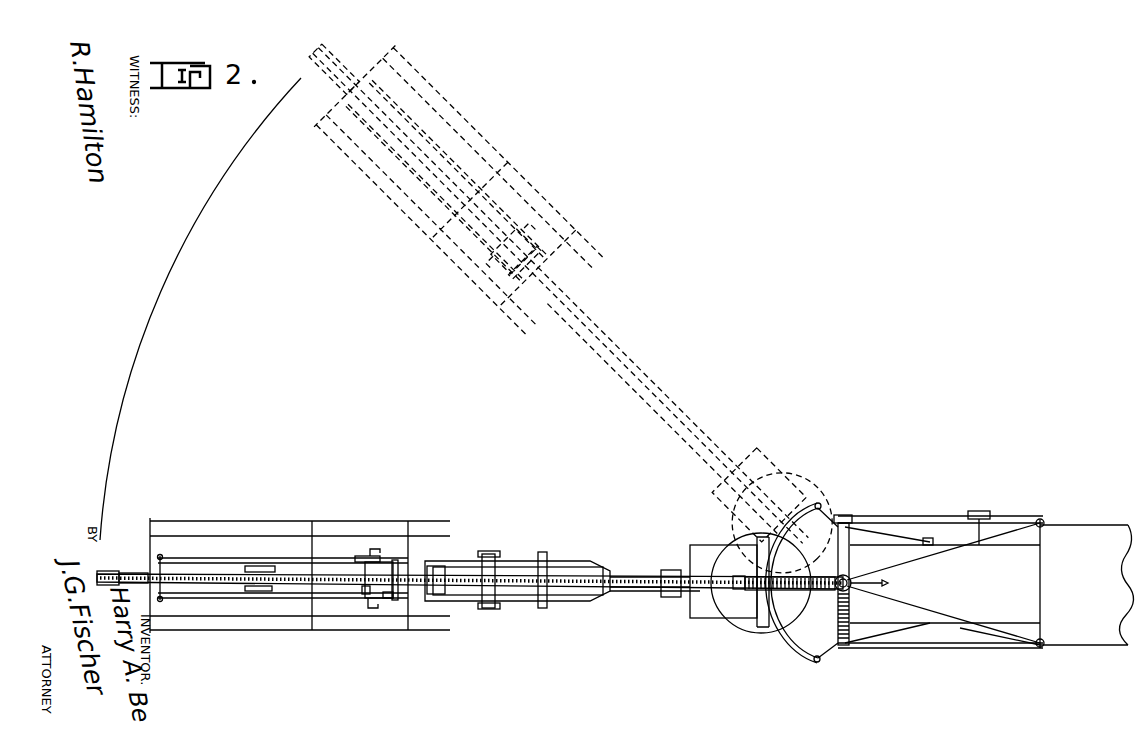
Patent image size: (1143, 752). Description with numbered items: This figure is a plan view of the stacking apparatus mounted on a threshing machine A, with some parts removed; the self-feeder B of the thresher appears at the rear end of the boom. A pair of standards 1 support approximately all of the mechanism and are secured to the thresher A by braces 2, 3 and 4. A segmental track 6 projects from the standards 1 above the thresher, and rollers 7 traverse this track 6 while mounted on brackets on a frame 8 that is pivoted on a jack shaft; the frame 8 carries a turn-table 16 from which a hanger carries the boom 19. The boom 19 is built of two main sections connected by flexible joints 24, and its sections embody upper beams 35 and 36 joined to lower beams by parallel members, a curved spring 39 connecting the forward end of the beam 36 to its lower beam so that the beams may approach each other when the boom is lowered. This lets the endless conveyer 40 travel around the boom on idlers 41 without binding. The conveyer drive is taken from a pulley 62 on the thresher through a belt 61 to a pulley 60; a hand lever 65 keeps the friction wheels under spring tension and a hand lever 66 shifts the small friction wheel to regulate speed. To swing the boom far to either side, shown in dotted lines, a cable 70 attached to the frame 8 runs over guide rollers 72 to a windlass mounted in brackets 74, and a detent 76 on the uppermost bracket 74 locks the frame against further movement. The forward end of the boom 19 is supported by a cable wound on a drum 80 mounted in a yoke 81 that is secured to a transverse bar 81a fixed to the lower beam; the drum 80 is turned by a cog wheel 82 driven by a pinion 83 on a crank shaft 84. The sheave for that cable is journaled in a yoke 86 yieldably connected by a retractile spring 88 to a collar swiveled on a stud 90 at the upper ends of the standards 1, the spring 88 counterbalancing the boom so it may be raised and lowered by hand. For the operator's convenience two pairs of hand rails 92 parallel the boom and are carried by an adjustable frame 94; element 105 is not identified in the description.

The standards 1 is at (841, 646).
The brace 2 is at (900, 625).
The brace 3 is at (940, 645).
The brace 4 is at (1010, 645).
The segmental track 6 is at (803, 645).
The rollers 7 is at (772, 628).
The frame 8 is at (760, 630).
The turn-table 16 is at (730, 550).
The boom 19 is at (515, 560).
The flexible joints 24 is at (517, 587).
The upper beam 35 is at (630, 572).
The upper beam 36 is at (288, 587).
The curved spring 39 is at (130, 585).
The endless conveyer 40 is at (503, 577).
The idlers 41 is at (100, 572).
The pulley 60 is at (850, 522).
The belt 61 is at (905, 525).
The pulley 62 is at (980, 511).
The hand lever 65 is at (890, 585).
The hand lever 66 is at (900, 595).
The cable 70 is at (793, 640).
The guide rollers 72 is at (817, 662).
The brackets 74 is at (943, 551).
The detent 76 is at (645, 590).
The drum 80 is at (383, 567).
The yoke 81 is at (227, 567).
The transverse bar 81a is at (158, 567).
The cog wheel 82 is at (382, 600).
The pinion 83 is at (358, 593).
The crank shaft 84 is at (372, 603).
The yoke 86 is at (745, 580).
The retractile spring 88 is at (790, 596).
The stud 90 is at (855, 576).
The hand rails 92 is at (240, 535).
The frame 94 is at (307, 530).
The nut 105 is at (265, 593).
The threshing machine A is at (1087, 584).
The self-feeder B is at (710, 620).